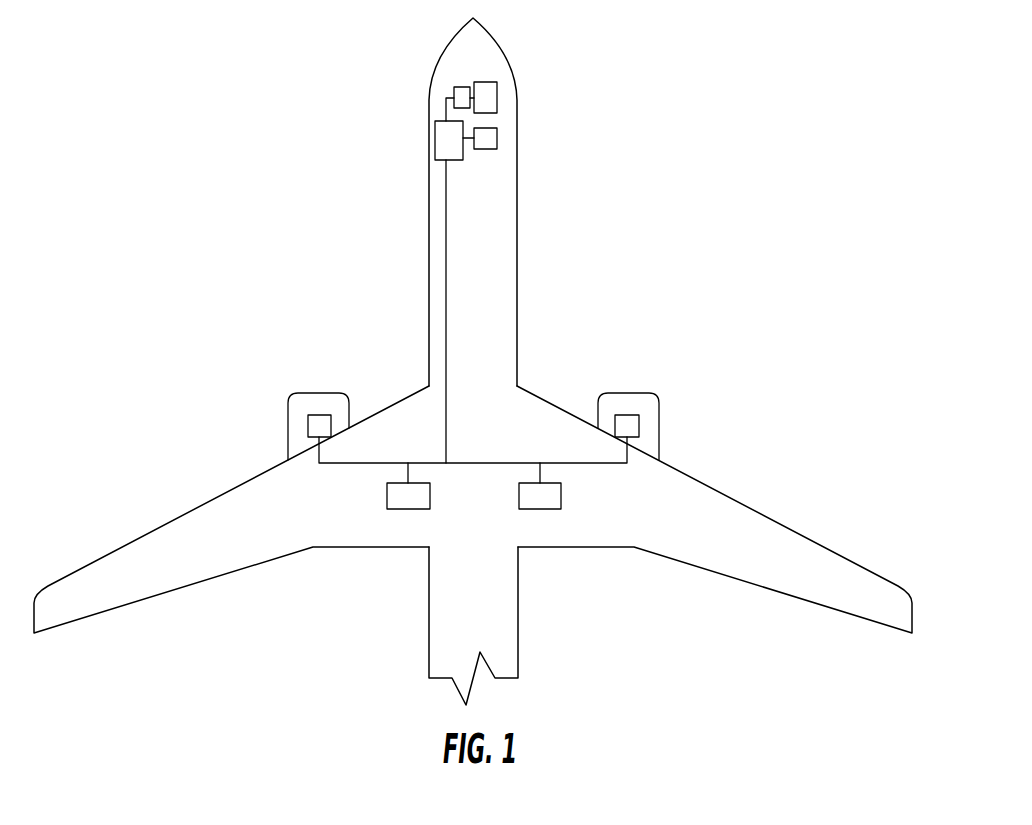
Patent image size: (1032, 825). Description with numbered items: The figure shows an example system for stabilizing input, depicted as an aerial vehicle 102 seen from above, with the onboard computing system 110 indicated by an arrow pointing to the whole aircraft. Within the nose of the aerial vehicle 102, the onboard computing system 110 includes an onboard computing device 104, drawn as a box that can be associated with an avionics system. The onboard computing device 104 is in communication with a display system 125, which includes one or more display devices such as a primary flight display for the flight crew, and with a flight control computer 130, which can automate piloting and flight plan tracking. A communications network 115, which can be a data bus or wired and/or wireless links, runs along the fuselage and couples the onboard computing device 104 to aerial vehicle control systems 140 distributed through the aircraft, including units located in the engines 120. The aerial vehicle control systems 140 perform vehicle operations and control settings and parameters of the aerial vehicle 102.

The onboard computing system 110 is at (473, 356).
The aerial vehicle 102 is at (507, 260).
The onboard computing device 104 is at (435, 140).
The communications network 115 is at (439, 305).
The engine 120 is at (320, 402).
The display system 125 is at (485, 82).
The flight control computer 130 is at (460, 87).
The aerial vehicle control system 140 is at (497, 137).